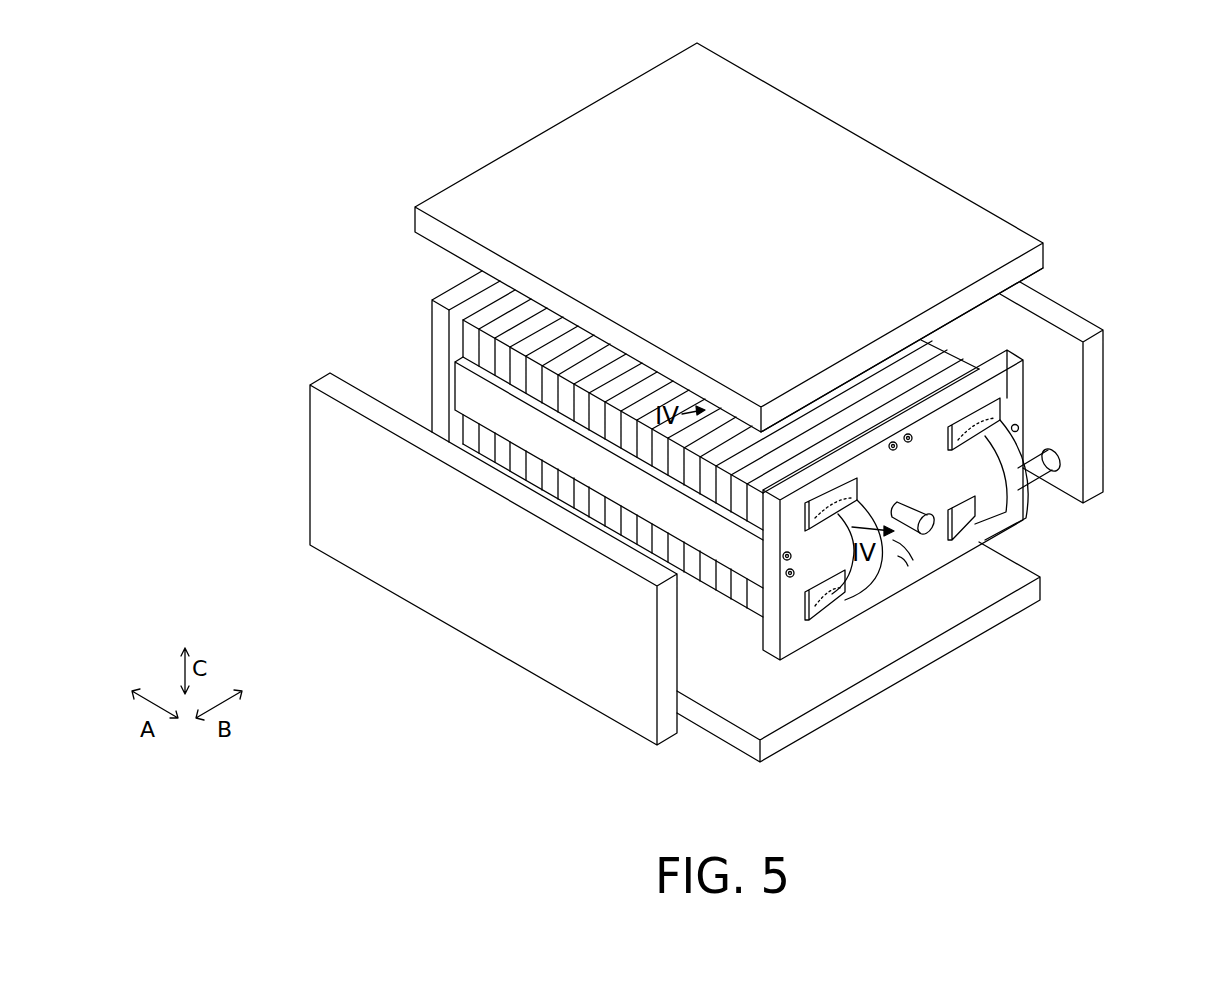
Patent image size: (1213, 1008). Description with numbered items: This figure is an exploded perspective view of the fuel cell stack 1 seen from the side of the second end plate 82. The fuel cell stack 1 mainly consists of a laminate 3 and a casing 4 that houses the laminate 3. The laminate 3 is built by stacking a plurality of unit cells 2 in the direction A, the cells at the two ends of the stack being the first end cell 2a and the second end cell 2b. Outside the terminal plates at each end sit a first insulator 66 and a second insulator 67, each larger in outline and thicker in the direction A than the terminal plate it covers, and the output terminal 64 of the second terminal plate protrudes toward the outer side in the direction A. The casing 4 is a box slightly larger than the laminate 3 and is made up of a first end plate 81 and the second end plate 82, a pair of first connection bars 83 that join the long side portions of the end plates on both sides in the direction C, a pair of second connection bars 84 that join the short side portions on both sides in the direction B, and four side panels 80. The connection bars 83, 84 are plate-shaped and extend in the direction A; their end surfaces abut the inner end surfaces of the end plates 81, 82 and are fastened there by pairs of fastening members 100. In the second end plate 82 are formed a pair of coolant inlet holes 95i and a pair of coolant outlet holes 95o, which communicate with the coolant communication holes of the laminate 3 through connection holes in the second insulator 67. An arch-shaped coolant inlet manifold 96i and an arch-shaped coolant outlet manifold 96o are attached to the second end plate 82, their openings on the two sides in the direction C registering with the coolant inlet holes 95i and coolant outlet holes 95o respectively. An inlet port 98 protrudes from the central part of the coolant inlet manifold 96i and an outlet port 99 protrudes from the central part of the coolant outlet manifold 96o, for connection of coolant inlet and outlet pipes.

The fuel cell stack 1 is at (1022, 170).
The unit cells 2 is at (645, 446).
The first end cell 2a is at (483, 443).
The second end cell 2b is at (738, 598).
The laminate 3 is at (614, 368).
The casing 4 is at (905, 152).
The output terminal 64 is at (940, 498).
The first insulator 66 is at (467, 340).
The second insulator 67 is at (747, 492).
The side panels 80 is at (832, 137).
The first end plate 81 is at (440, 293).
The second end plate 82 is at (982, 560).
The first connection bars 83 is at (848, 396).
The second connection bars 84 is at (467, 390).
The coolant inlet holes 95i is at (857, 488).
The coolant outlet holes 95o is at (1010, 420).
The coolant inlet manifold 96i is at (870, 590).
The coolant outlet manifold 96o is at (1020, 443).
The inlet port 98 is at (933, 532).
The outlet port 99 is at (1052, 462).
The fastening members 100 is at (908, 434).